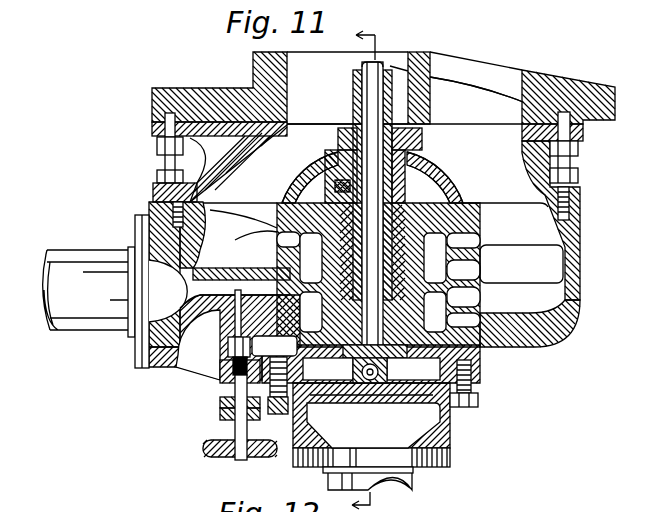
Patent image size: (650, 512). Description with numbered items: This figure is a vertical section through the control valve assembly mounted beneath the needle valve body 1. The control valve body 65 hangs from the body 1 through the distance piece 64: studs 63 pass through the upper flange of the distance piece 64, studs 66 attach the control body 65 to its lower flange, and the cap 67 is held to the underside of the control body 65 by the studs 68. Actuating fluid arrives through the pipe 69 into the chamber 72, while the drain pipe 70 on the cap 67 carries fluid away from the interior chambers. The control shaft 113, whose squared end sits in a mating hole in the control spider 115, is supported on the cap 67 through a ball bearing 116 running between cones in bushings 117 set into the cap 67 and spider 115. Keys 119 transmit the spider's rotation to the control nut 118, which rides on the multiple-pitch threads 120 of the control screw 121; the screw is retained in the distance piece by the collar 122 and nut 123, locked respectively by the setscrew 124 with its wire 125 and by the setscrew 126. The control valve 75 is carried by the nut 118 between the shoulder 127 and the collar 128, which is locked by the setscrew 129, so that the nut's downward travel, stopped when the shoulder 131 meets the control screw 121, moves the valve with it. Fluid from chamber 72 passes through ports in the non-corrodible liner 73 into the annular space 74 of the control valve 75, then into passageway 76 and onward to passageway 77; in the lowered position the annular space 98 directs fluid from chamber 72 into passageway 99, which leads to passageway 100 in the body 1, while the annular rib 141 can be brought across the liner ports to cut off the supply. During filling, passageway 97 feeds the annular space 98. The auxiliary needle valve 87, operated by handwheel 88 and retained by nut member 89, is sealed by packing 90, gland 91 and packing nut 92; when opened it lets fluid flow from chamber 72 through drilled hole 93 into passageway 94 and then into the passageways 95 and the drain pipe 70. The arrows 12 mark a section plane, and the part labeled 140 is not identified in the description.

The body 1 is at (253, 70).
The section line 12 is at (377, 267).
The control shaft 113 is at (362, 64).
The passageway 100 is at (337, 118).
The passageway 77 is at (503, 90).
The packing sleeve 140 is at (395, 100).
The nut 123 is at (422, 140).
The collar 122 is at (425, 168).
The wire 125 is at (444, 175).
The control nut 118 is at (456, 190).
The setscrew 126 is at (340, 136).
The setscrew 124 is at (336, 160).
The collar 128 is at (325, 178).
The setscrew 129 is at (315, 190).
The control screw 121 is at (285, 212).
The non-corrodible liner 73 is at (285, 230).
The passageway 97 is at (285, 243).
The passageway 99 is at (250, 252).
The annular rib 141 is at (295, 262).
The shoulder 127 is at (295, 293).
The annular space 98 is at (373, 258).
The annular space 74 is at (373, 312).
The control valve 75 is at (445, 222).
The threads 120 is at (462, 276).
The chamber 72 is at (205, 293).
The shoulder 131 is at (470, 303).
The passageway 76 is at (518, 320).
The pipe 69 is at (48, 252).
The control valve body 65 is at (580, 300).
The studs 63 is at (580, 151).
The studs 66 is at (580, 179).
The distance piece 64 is at (193, 157).
The drilled hole 93 is at (225, 332).
The auxiliary needle valve 87 is at (228, 345).
The nut member 89 is at (222, 380).
The packing 90 is at (232, 402).
The gland 91 is at (230, 412).
The packing nut 92 is at (225, 422).
The handwheel 88 is at (203, 450).
The passageway 94 is at (495, 357).
The control spider 115 is at (328, 369).
The bushings 117 is at (359, 370).
The ball bearing 116 is at (379, 362).
The keys 119 is at (414, 369).
The passageways 95 is at (385, 418).
The cap 67 is at (450, 435).
The studs 68 is at (480, 405).
The pipe 70 is at (408, 486).